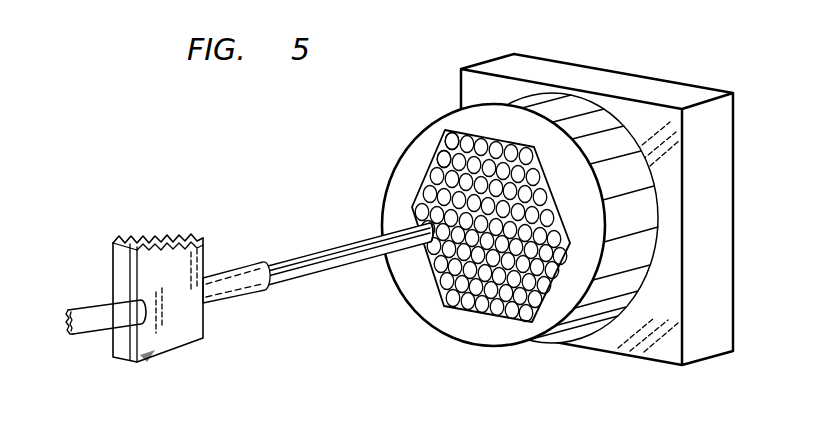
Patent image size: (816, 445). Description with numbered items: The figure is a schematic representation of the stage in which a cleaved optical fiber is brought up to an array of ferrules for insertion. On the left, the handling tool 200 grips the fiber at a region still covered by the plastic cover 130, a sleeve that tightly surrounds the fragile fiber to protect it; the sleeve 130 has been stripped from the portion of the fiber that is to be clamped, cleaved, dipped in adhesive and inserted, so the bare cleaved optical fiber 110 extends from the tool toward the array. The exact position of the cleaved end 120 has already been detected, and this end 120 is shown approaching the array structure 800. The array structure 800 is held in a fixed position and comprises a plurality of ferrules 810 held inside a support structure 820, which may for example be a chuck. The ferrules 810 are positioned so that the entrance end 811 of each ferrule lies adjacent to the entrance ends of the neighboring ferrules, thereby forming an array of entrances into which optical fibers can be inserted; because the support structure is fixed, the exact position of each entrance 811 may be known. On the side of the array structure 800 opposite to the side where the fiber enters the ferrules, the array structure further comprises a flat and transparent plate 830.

The handling tool 200 is at (118, 257).
The cleaved optical fiber 110 is at (312, 253).
The cleaved end 120 is at (428, 217).
The plastic cover 130 is at (232, 298).
The array structure 800 is at (413, 288).
The ferrules 810 is at (422, 178).
The entrance end 811 is at (434, 162).
The support structure 820 is at (604, 298).
The flat and transparent plate 830 is at (722, 157).